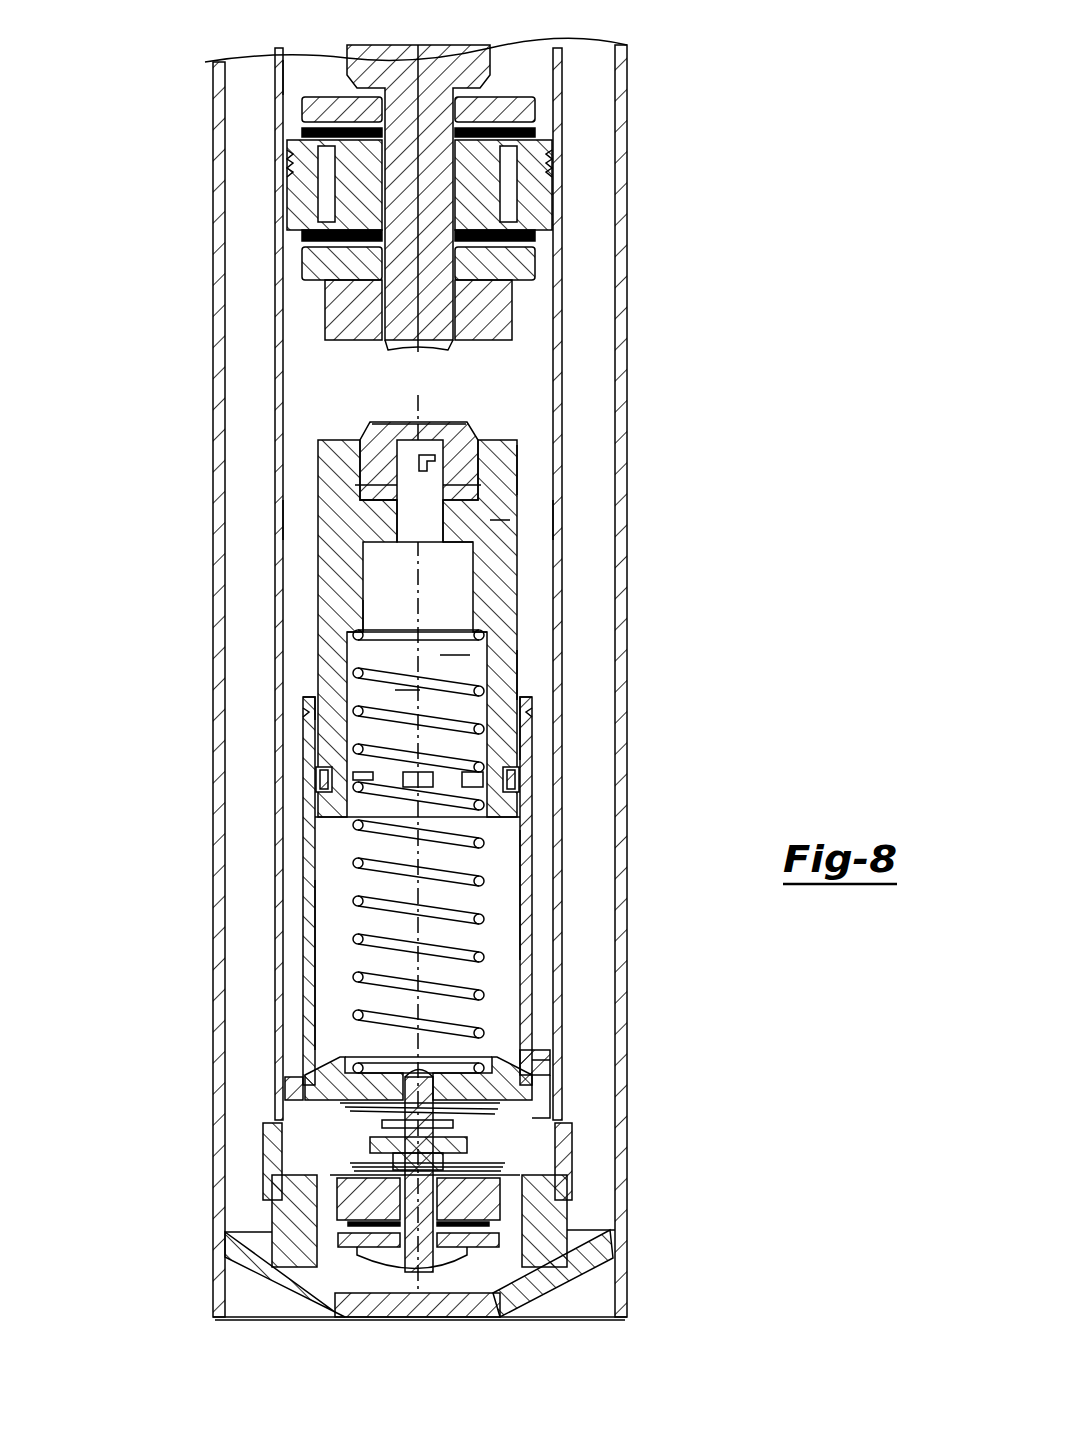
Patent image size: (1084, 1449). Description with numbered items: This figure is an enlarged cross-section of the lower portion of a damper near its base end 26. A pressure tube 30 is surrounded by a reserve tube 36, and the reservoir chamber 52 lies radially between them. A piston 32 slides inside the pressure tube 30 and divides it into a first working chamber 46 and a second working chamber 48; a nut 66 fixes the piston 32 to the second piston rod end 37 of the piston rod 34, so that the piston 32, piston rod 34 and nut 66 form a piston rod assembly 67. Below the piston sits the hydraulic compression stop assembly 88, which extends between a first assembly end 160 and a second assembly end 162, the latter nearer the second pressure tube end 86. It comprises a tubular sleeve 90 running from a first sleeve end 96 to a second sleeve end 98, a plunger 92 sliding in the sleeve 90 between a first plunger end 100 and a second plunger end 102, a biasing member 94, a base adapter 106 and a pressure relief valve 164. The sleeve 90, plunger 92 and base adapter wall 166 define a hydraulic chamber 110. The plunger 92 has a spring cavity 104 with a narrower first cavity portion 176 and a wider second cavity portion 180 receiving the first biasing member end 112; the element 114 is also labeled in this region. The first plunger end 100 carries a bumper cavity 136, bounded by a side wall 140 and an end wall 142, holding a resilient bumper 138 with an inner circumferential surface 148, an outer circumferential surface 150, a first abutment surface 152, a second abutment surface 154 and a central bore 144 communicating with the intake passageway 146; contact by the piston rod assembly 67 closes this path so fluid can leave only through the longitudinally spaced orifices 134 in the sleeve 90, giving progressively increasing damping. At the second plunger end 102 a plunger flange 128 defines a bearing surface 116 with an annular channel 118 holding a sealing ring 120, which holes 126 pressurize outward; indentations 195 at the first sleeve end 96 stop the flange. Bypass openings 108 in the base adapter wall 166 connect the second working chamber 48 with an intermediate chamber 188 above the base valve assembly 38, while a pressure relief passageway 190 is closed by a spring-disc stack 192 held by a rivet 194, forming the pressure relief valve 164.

The base end 26 is at (191, 1302).
The pressure tube 30 is at (283, 858).
The piston 32 is at (402, 226).
The piston rod 34 is at (511, 180).
The reserve tube 36 is at (222, 398).
The second piston rod end 37 is at (433, 312).
The base valve assembly 38 is at (355, 1268).
The first working chamber 46 is at (302, 74).
The second working chamber 48 is at (302, 530).
The reservoir chamber 52 is at (580, 532).
The nut 66 is at (355, 298).
The piston rod assembly 67 is at (318, 346).
The second pressure tube end 86 is at (577, 1151).
The hydraulic compression stop assembly 88 is at (530, 672).
The sleeve 90 is at (505, 936).
The plunger 92 is at (495, 540).
The biasing member 94 is at (357, 1015).
The first sleeve end 96 is at (304, 707).
The second sleeve end 98 is at (541, 1066).
The first plunger end 100 is at (458, 799).
The second plunger end 102 is at (434, 890).
The spring cavity 104 is at (403, 701).
The base adapter 106 is at (489, 1128).
The bypass openings 108 is at (289, 1138).
The hydraulic chamber 110 is at (504, 880).
The first biasing member end 112 is at (356, 632).
The lower flange 114 is at (540, 1051).
The bearing surface 116 is at (311, 803).
The annular channel 118 is at (308, 735).
The sealing ring 120 is at (520, 768).
The holes 126 is at (370, 771).
The plunger flange 128 is at (535, 727).
The orifices 134 is at (303, 1040).
The bumper cavity 136 is at (492, 450).
The bumper 138 is at (362, 490).
The side wall 140 is at (392, 426).
The end wall 142 is at (488, 437).
The central bore 144 is at (463, 490).
The intake passageway 146 is at (445, 612).
The inner circumferential surface 148 is at (432, 498).
The outer circumferential surface 150 is at (481, 484).
The first abutment surface 152 is at (381, 417).
The second abutment surface 154 is at (378, 508).
The first assembly end 160 is at (524, 462).
The second assembly end 162 is at (567, 1116).
The pressure relief valve 164 is at (500, 1130).
The base adapter wall 166 is at (329, 1041).
The first cavity portion 176 is at (338, 604).
The second cavity portion 180 is at (447, 656).
The intermediate chamber 188 is at (258, 1165).
The pressure relief passageway 190 is at (375, 1082).
The spring-disc stack 192 is at (360, 1115).
The rivet 194 is at (455, 1200).
The indentations 195 is at (520, 707).